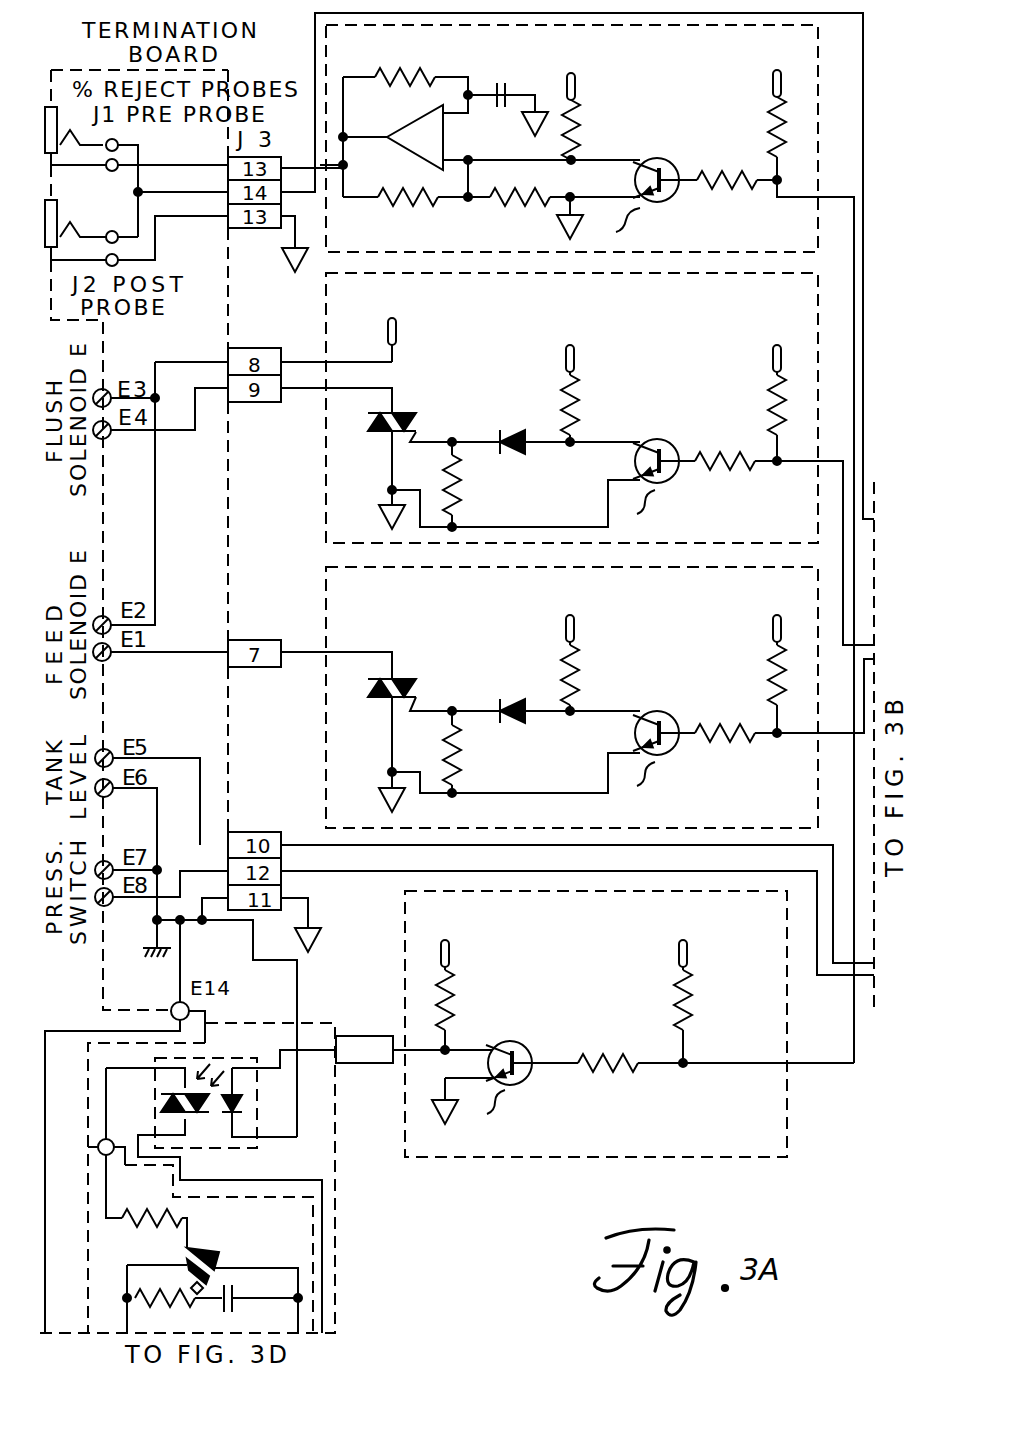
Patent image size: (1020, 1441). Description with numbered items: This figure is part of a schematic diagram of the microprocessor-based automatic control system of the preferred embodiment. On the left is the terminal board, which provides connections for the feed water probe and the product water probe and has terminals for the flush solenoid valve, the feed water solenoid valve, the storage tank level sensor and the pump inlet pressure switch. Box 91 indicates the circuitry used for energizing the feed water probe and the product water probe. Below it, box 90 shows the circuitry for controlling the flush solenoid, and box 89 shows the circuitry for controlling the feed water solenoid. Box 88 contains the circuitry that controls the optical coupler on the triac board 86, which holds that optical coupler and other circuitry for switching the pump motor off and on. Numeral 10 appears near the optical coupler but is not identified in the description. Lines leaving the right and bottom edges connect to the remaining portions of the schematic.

The optocoupler control line 10 is at (221, 1182).
The triac board 86 is at (220, 1178).
The pump motor optical coupler control circuitry 88 is at (512, 1158).
The feed water solenoid control circuitry 89 is at (324, 595).
The flush solenoid control circuitry 90 is at (327, 320).
The probe energizing circuitry 91 is at (326, 60).